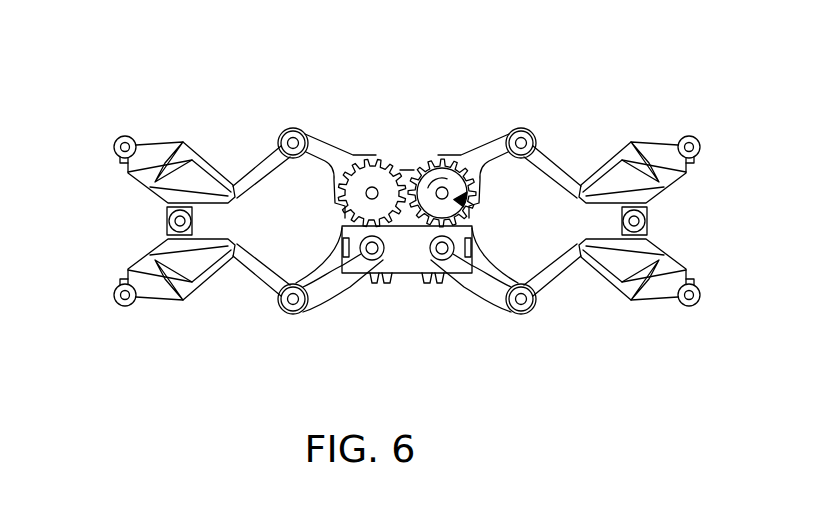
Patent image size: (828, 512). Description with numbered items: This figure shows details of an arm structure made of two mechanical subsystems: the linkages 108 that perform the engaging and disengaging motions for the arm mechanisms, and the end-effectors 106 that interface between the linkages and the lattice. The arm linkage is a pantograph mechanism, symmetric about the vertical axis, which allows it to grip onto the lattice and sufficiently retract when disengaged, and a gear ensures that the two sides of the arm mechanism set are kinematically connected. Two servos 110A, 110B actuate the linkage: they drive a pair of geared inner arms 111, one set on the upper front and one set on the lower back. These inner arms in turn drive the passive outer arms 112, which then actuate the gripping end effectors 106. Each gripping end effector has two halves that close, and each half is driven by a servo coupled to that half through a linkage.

The end-effector 106 is at (160, 224).
The linkages 108 is at (295, 128).
The servo 110A is at (409, 166).
The servo 110B is at (400, 274).
The geared inner arms 111 is at (328, 157).
The passive outer arms 112 is at (272, 283).